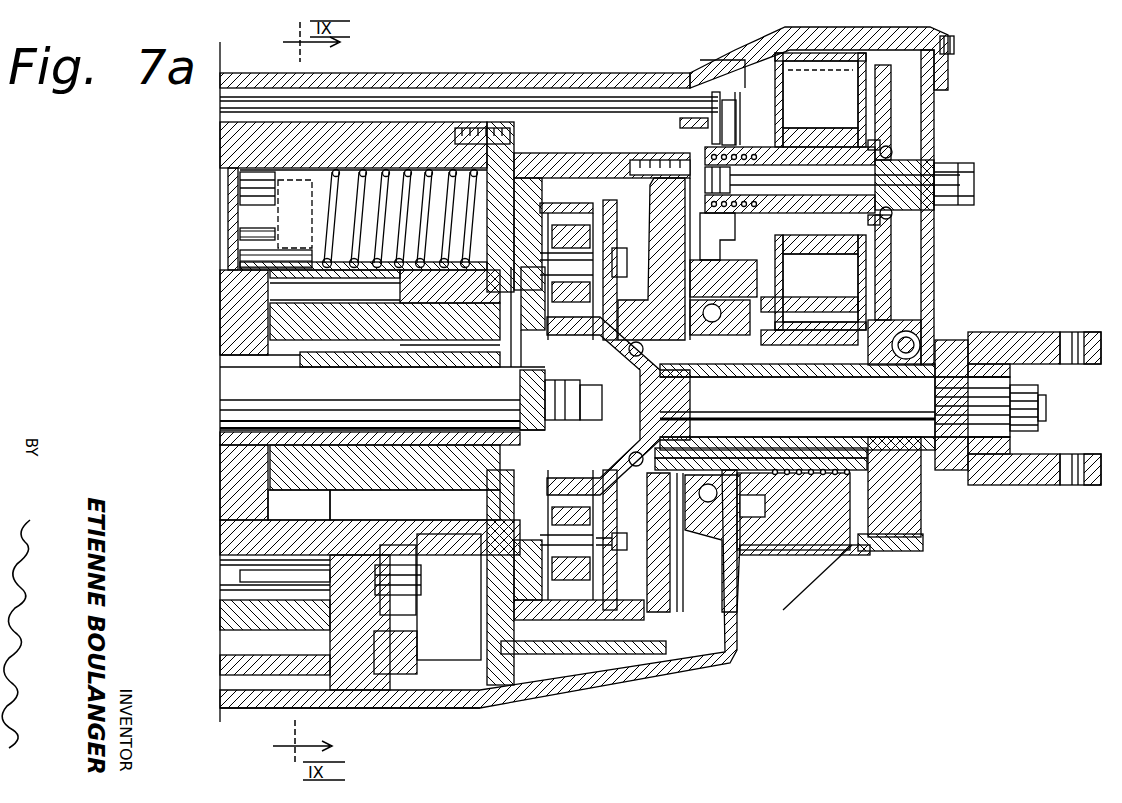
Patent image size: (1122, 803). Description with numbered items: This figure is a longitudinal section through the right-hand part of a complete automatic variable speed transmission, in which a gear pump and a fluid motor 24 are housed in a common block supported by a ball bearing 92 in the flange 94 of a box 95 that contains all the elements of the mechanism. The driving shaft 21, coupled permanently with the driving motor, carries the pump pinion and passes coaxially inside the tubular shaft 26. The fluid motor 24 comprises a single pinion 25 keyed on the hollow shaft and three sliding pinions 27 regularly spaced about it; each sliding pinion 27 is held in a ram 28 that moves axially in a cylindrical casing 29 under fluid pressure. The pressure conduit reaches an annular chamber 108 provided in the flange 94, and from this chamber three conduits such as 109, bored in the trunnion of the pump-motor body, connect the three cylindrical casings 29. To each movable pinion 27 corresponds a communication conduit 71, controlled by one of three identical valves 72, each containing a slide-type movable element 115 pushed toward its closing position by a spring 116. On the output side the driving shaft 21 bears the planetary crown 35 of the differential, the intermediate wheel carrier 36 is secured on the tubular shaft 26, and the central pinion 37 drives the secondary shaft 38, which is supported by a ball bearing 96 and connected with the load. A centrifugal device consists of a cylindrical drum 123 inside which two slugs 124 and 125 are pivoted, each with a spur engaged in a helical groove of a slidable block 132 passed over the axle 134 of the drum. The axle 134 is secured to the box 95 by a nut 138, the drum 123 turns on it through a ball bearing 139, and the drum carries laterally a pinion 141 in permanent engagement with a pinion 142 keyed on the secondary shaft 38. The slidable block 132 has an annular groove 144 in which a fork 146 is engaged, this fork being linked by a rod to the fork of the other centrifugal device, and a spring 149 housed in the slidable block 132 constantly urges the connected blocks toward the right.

The driving shaft 21 is at (350, 402).
The fluid motor 24 is at (310, 517).
The pinion 25 is at (355, 478).
The tubular shaft 26 is at (406, 355).
The sliding pinion 27 is at (292, 612).
The ram 28 is at (345, 672).
The cylindrical casing 29 is at (460, 637).
The planetary crown 35 is at (606, 178).
The intermediate wheel carrier 36 is at (586, 203).
The central pinion 37 is at (605, 406).
The secondary shaft 38 is at (906, 414).
The communication conduit 71 is at (290, 232).
The valve 72 is at (450, 183).
The ball bearing 92 is at (748, 545).
The flange 94 is at (708, 555).
The box 95 is at (274, 708).
The ball bearing 96 is at (634, 528).
The annular chamber 108 is at (804, 470).
The conduit 109 is at (700, 672).
The movable element 115 is at (306, 205).
The spring 116 is at (516, 166).
The cylindrical drum 123 is at (798, 56).
The slug 124 is at (836, 108).
The slug 125 is at (842, 275).
The slidable block 132 is at (784, 134).
The axle 134 is at (930, 210).
The nut 138 is at (970, 178).
The ball bearing 139 is at (895, 146).
The pinion 141 is at (890, 100).
The pinion 142 is at (888, 312).
The annular groove 144 is at (728, 232).
The fork 146 is at (745, 88).
The spring 149 is at (740, 142).